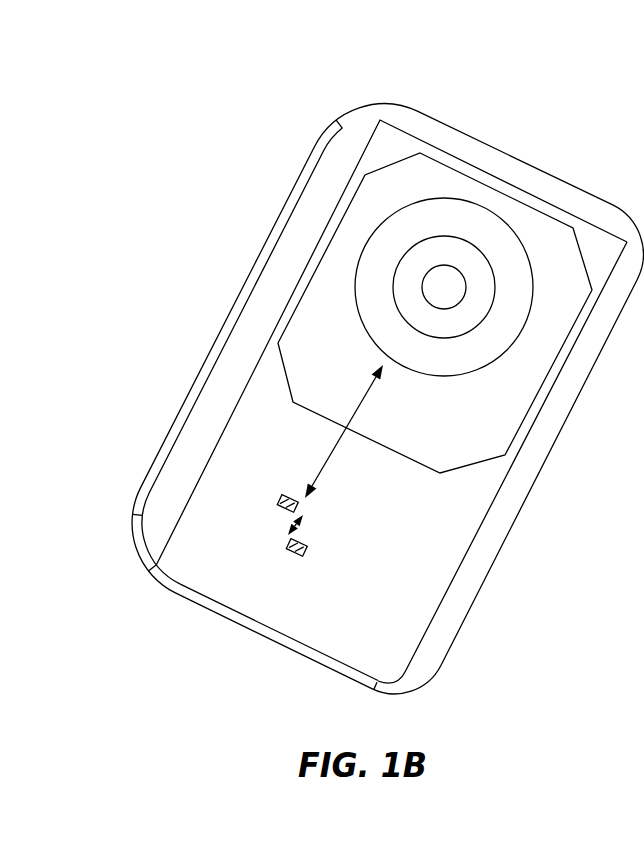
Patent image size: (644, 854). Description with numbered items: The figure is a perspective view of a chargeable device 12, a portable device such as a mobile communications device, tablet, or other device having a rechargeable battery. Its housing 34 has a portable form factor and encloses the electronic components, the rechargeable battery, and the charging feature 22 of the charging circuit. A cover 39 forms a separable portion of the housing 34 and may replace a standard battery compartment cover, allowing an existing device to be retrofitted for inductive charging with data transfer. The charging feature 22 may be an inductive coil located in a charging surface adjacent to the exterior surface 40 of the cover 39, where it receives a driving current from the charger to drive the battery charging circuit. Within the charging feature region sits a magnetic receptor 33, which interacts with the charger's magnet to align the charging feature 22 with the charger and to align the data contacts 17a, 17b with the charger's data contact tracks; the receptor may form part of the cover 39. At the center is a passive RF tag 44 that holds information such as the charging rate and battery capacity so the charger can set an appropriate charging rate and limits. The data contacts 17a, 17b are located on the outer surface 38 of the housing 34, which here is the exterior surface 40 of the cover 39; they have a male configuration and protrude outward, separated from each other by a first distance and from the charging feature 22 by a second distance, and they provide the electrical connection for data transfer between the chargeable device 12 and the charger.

The chargeable device 12 is at (212, 264).
The housing 34 is at (362, 101).
The outer surface 38 is at (246, 325).
The exterior surface 40 is at (586, 257).
The cover 39 is at (512, 187).
The charging feature 22 is at (407, 358).
The magnetic receptor 33 is at (410, 308).
The RF tag 44 is at (448, 278).
The data contact 17a is at (310, 548).
The data contact 17b is at (300, 500).